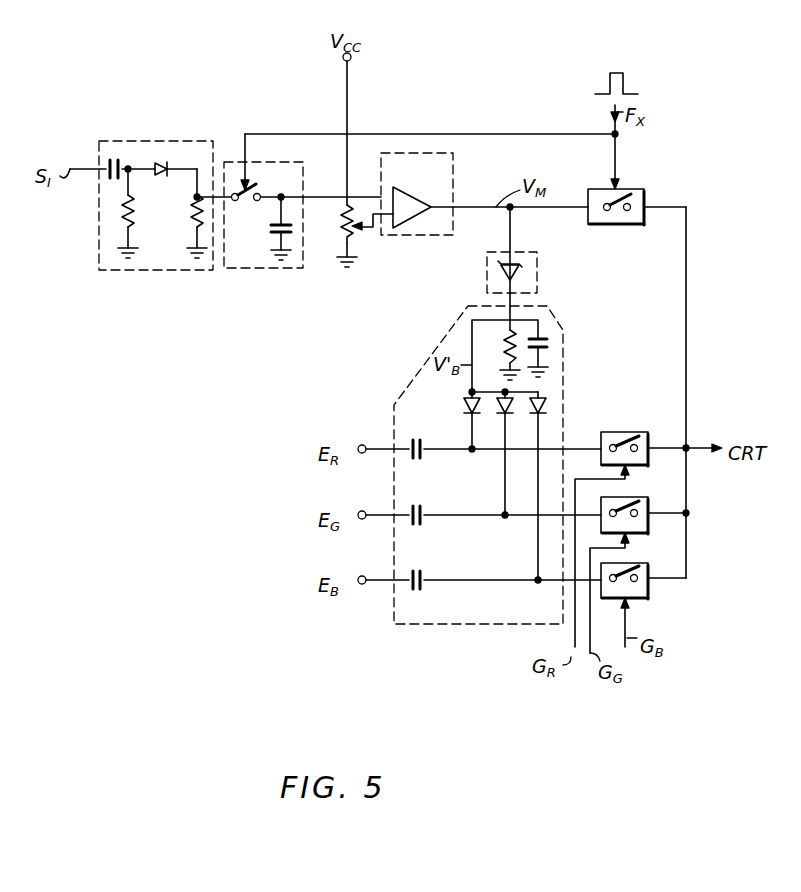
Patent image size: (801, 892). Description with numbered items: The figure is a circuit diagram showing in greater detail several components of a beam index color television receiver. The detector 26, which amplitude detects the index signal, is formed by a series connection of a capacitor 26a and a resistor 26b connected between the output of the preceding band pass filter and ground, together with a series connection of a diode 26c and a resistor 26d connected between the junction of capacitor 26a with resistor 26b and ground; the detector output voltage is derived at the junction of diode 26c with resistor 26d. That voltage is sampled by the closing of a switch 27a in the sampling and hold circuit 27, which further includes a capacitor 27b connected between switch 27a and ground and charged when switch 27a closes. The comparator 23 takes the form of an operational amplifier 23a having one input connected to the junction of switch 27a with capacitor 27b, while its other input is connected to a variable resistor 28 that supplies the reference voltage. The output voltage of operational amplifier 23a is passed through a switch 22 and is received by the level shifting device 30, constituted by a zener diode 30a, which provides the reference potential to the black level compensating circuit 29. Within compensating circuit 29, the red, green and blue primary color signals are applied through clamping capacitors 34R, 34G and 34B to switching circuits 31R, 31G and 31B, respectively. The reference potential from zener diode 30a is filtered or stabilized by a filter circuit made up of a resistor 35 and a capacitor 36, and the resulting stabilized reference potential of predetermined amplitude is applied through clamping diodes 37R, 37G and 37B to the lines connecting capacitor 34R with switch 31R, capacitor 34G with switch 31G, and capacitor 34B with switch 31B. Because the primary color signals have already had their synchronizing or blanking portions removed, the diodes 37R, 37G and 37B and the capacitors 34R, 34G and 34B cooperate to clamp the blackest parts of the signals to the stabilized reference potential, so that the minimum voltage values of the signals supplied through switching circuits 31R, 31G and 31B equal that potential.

The switch 22 is at (637, 190).
The comparator 23 is at (442, 154).
The operational amplifier 23a is at (410, 203).
The detector 26 is at (156, 139).
The capacitor 26a is at (116, 157).
The resistor 26b is at (123, 223).
The diode 26c is at (171, 160).
The resistor 26d is at (195, 228).
The sampling and hold circuit 27 is at (287, 152).
The switch 27a is at (258, 184).
The capacitor 27b is at (270, 229).
The variable resistor 28 is at (350, 233).
The black level compensating circuit 29 is at (427, 632).
The level shifting device 30 is at (537, 259).
The zener diode 30a is at (498, 269).
The switching circuit 31R is at (624, 430).
The switching circuit 31G is at (648, 483).
The switching circuit 31B is at (638, 566).
The clamping capacitor 34R is at (422, 457).
The clamping capacitor 34G is at (428, 525).
The clamping capacitor 34B is at (428, 589).
The resistor 35 is at (506, 355).
The capacitor 36 is at (549, 341).
The clamping diode 37R is at (465, 409).
The clamping diode 37G is at (508, 413).
The clamping diode 37B is at (548, 399).